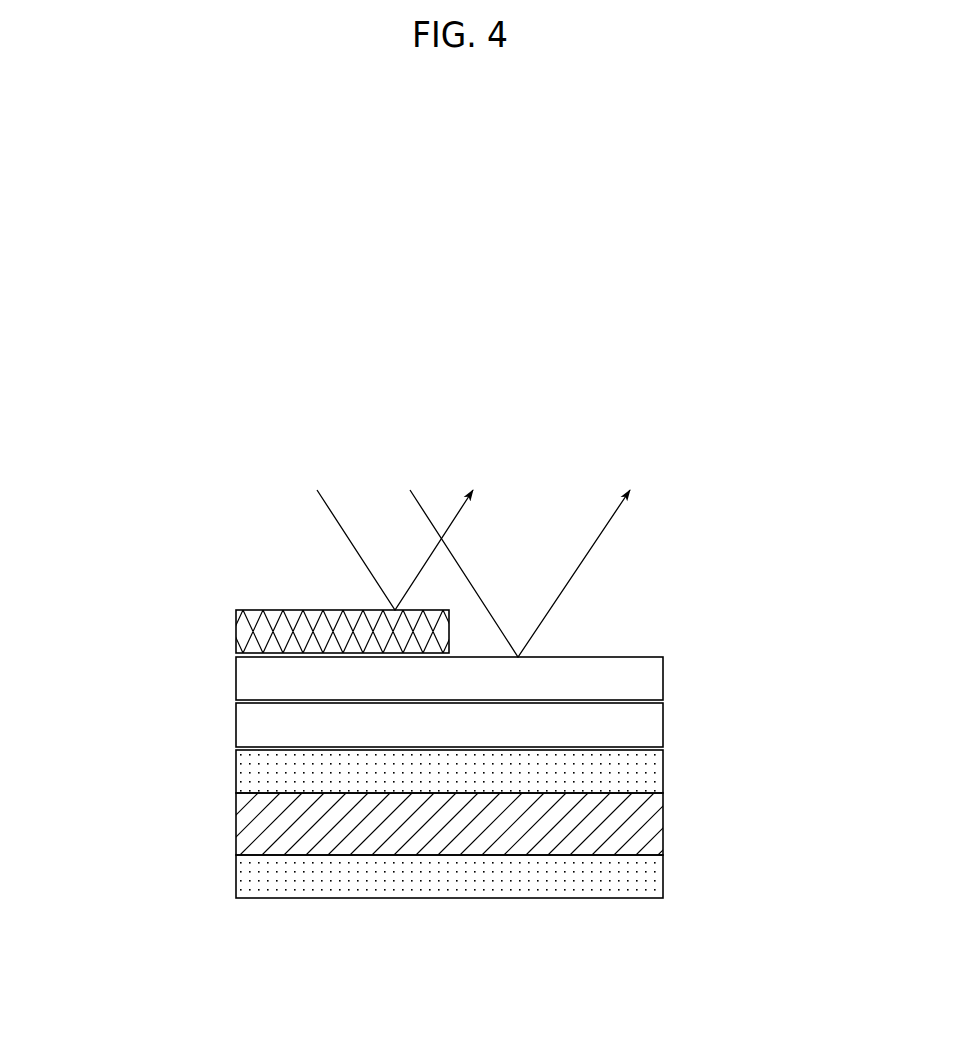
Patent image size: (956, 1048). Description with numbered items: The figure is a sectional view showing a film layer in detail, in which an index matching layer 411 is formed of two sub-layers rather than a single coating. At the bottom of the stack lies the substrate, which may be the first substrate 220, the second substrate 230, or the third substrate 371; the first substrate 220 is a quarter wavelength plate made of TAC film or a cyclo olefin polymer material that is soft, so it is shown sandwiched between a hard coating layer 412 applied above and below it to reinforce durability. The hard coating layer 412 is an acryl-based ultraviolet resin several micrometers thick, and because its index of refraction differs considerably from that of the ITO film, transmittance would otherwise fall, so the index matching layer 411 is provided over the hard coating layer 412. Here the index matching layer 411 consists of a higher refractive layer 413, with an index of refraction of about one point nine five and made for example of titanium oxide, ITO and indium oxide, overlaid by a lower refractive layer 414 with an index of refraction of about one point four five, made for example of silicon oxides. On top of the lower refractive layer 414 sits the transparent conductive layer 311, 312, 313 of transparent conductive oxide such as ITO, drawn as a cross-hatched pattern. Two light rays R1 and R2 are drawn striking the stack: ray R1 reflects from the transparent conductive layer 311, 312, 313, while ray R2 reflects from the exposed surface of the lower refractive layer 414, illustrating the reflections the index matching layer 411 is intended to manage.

The transparent conductive layer 311 is at (267, 631).
The transparent conductive layer 312 is at (353, 631).
The transparent conductive layer 313 is at (247, 642).
The index matching layer 411 is at (508, 768).
The lower refractive layer 414 is at (653, 680).
The higher refractive layer 413 is at (653, 727).
The hard coating layer 412 is at (653, 773).
The first substrate 220 is at (498, 824).
The second substrate 230 is at (447, 824).
The third substrate 371 is at (653, 827).
The reflected light ray 1 R1 is at (405, 534).
The reflected light ray 2 R2 is at (529, 557).